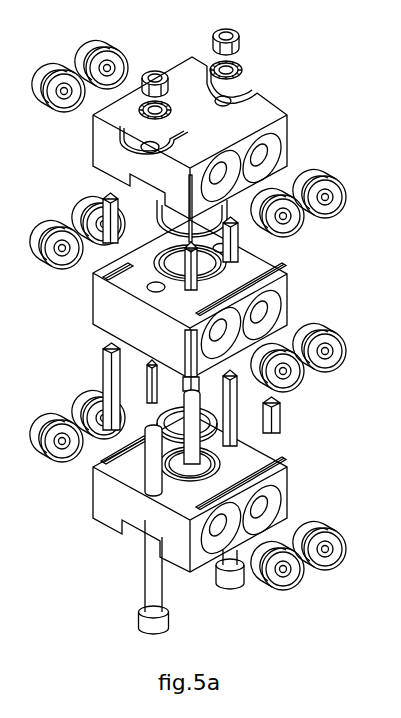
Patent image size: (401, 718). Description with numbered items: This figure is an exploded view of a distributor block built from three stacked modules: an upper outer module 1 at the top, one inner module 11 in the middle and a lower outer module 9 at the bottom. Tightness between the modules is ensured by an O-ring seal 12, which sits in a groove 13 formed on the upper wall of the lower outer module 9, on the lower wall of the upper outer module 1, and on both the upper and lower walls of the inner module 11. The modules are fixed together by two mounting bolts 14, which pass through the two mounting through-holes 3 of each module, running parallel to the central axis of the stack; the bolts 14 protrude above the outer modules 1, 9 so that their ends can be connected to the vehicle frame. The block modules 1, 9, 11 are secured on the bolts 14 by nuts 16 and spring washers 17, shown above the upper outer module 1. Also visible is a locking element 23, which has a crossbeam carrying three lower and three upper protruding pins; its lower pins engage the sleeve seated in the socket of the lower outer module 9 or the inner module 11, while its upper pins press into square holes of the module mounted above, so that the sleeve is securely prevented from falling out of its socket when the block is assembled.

The upper outer module 1 is at (242, 114).
The mounting through-holes 3 is at (150, 283).
The lower outer module 9 is at (250, 459).
The inner module 11 is at (280, 286).
The O-ring seal 12 is at (160, 412).
The groove 13 is at (168, 474).
The mounting bolts 14 is at (225, 565).
The nuts 16 is at (238, 42).
The spring washers 17 is at (238, 69).
The locking element 23 is at (103, 358).